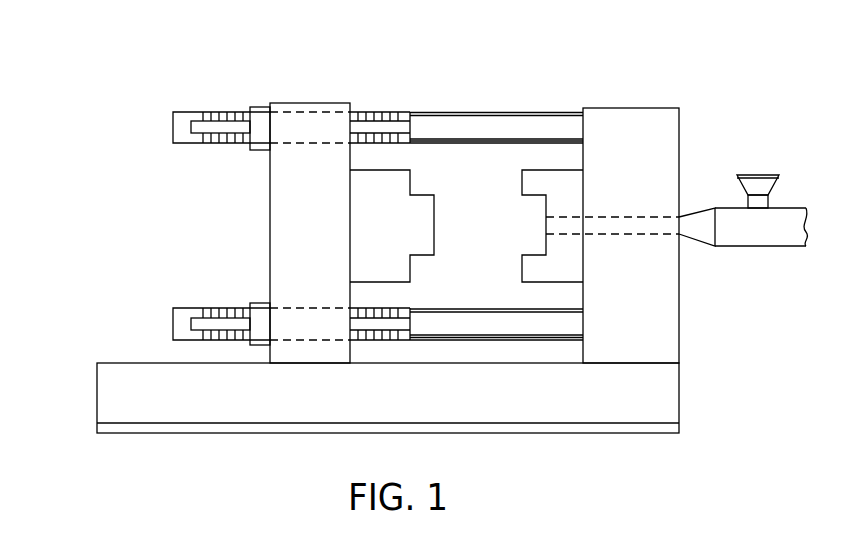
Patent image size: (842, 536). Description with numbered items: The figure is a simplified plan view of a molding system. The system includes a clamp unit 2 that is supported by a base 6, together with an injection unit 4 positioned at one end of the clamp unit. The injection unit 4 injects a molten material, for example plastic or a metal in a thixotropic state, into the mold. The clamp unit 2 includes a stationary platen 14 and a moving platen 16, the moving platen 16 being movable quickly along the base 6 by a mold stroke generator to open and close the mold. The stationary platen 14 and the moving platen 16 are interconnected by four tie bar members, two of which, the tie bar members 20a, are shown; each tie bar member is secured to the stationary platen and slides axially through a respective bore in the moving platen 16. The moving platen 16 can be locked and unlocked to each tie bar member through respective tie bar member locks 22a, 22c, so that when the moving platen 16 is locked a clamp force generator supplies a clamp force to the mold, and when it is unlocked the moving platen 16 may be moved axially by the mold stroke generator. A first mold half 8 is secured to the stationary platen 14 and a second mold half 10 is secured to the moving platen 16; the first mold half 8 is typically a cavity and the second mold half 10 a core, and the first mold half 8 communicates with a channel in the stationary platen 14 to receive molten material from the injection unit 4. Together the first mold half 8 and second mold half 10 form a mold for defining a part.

The clamp unit 2 is at (489, 67).
The injection unit 4 is at (793, 207).
The base 6 is at (97, 395).
The first mold half 8 is at (522, 182).
The second mold half 10 is at (434, 230).
The stationary platen 14 is at (632, 108).
The moving platen 16 is at (310, 103).
The tie bar member 20a is at (443, 108).
The tie bar member lock 22a is at (263, 105).
The tie bar member lock 22c is at (263, 302).